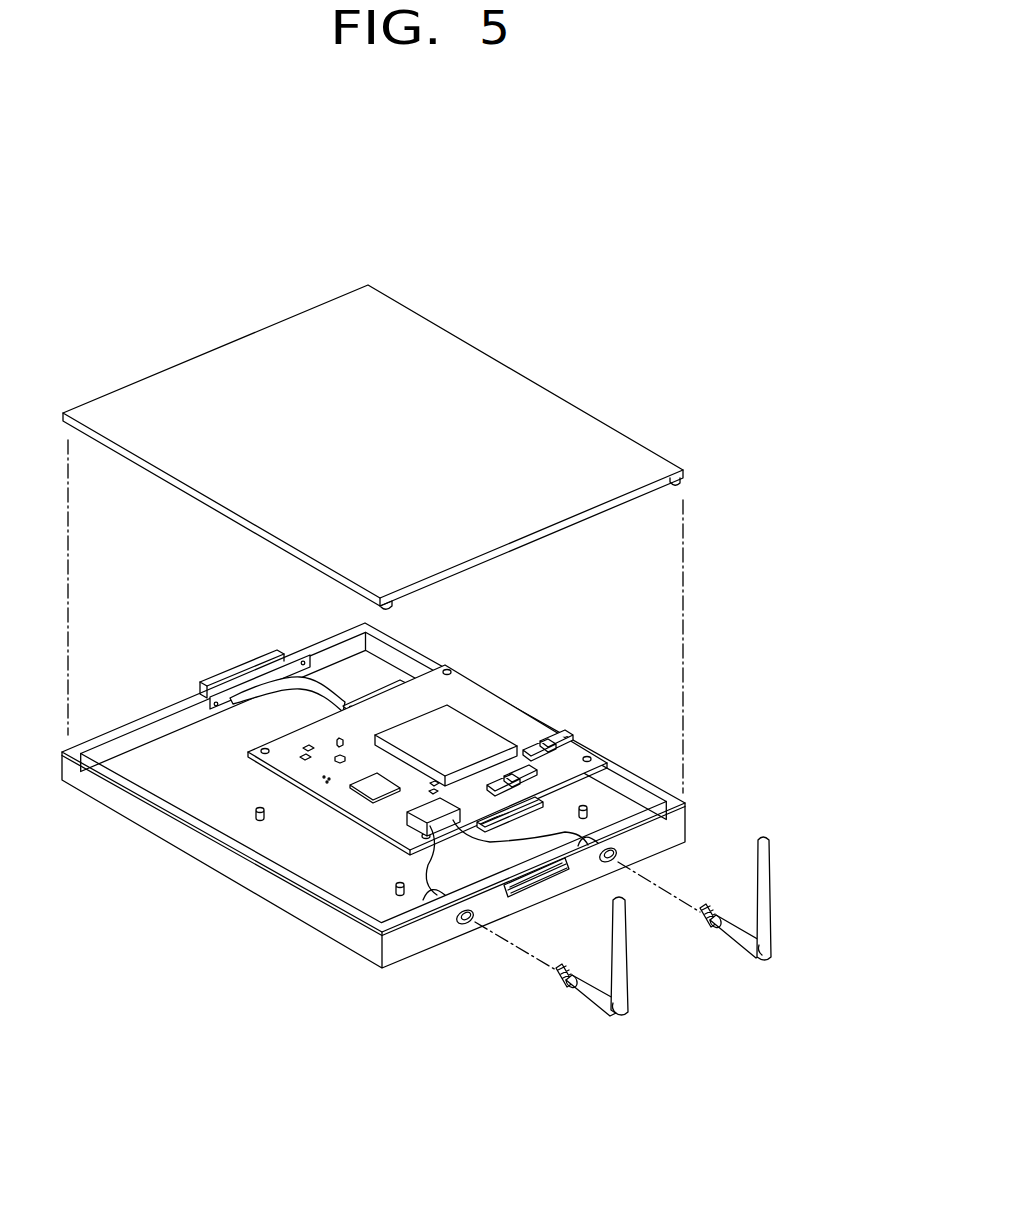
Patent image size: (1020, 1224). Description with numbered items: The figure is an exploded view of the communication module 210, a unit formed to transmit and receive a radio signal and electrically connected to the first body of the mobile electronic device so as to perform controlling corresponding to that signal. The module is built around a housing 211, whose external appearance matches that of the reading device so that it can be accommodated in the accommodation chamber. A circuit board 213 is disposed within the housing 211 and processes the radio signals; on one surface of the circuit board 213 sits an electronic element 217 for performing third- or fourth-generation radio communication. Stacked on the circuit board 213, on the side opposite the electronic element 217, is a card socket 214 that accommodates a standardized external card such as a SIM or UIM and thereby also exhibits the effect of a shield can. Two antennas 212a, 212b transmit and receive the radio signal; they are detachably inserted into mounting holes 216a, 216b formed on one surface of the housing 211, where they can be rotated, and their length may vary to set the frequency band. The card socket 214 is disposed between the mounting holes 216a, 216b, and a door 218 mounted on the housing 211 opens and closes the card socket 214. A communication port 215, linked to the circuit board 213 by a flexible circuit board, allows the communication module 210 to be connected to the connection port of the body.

The communication module 210 is at (600, 316).
The housing 211 is at (230, 865).
The antenna 212a is at (623, 972).
The antenna 212b is at (767, 912).
The circuit board 213 is at (520, 727).
The card socket 214 is at (540, 807).
The communication port 215 is at (240, 672).
The mounting hole 216a is at (472, 925).
The mounting hole 216b is at (618, 863).
The electronic element 217 is at (460, 717).
The door 218 is at (527, 896).